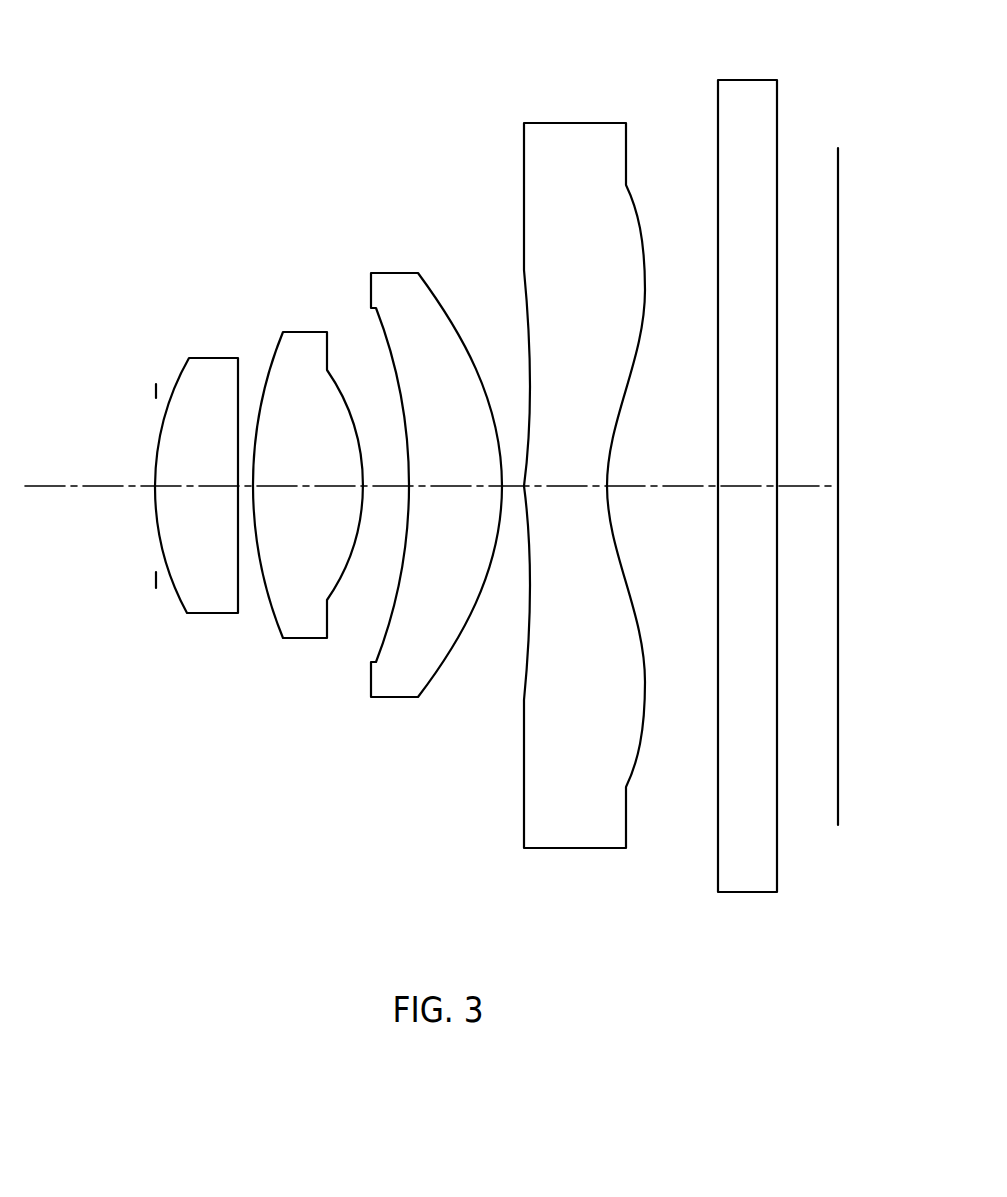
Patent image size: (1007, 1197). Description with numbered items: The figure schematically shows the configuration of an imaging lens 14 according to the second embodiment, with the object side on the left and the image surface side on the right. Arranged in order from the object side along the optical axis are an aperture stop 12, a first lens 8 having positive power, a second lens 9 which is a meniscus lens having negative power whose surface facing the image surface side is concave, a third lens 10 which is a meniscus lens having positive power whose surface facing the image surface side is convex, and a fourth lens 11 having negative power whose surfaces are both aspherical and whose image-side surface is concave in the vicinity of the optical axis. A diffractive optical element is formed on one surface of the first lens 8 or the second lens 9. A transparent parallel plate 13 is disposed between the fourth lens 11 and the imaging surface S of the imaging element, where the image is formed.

The first lens 8 is at (213, 358).
The second lens 9 is at (304, 332).
The third lens 10 is at (394, 273).
The fourth lens 11 is at (574, 123).
The aperture stop 12 is at (155, 391).
The transparent parallel plate 13 is at (747, 80).
The imaging lens 14 is at (290, 112).
The imaging surface S is at (840, 197).